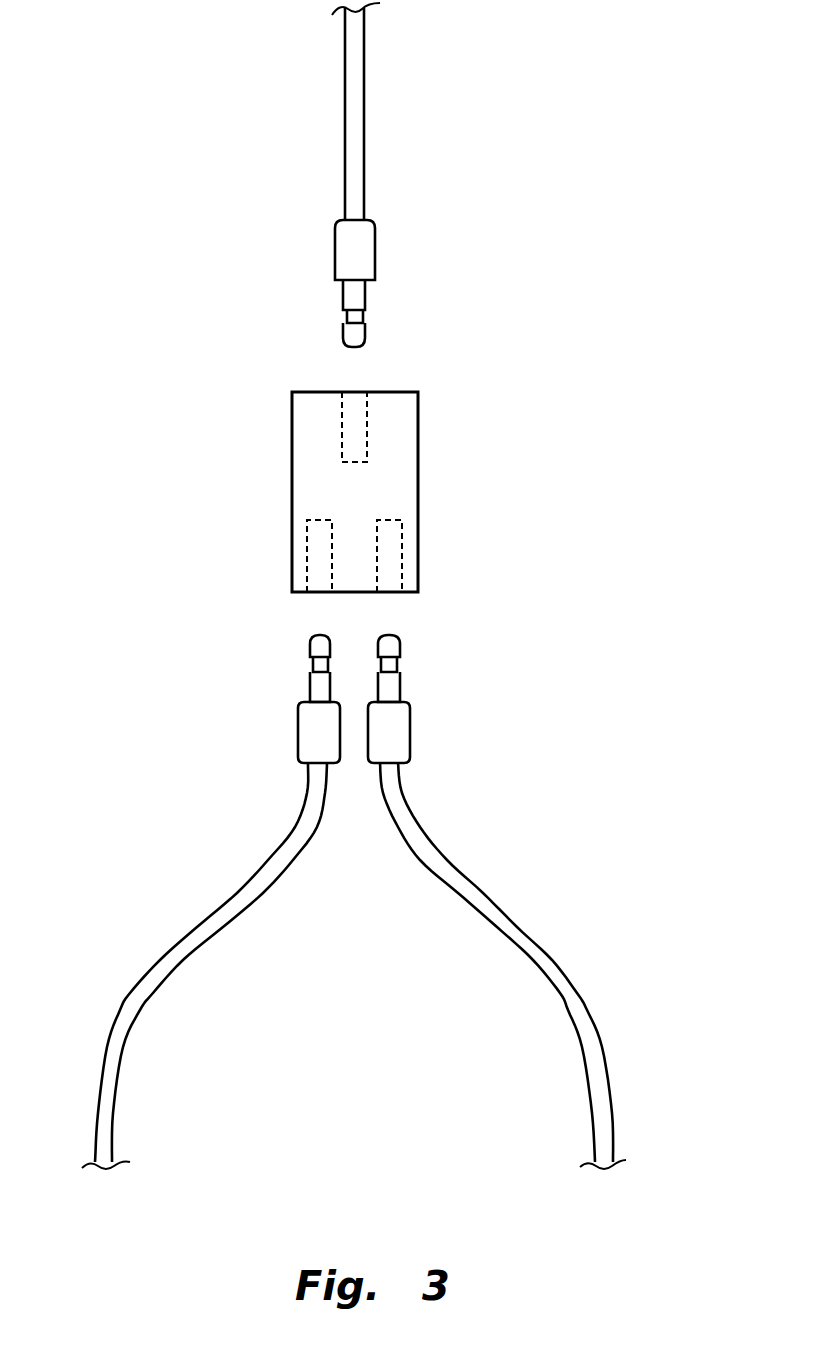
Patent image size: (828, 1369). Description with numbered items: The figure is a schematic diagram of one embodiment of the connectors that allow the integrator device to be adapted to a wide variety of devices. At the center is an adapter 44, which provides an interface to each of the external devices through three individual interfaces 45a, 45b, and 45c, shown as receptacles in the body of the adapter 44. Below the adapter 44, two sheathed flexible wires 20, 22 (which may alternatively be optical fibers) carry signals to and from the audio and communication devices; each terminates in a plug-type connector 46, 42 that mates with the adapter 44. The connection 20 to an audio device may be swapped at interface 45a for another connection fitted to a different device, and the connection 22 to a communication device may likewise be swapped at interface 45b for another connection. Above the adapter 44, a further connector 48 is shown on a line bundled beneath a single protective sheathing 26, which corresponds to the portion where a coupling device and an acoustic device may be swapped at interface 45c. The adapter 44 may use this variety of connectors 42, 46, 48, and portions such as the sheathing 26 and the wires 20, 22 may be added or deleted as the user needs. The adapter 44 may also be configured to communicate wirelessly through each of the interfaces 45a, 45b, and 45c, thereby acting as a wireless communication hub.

The sheathed flexible wire 20 is at (136, 990).
The sheathed flexible wire 22 is at (588, 1033).
The single protective sheathing 26 is at (355, 97).
The connector 42 is at (398, 730).
The adapter 44 is at (407, 483).
The interface 45a is at (320, 563).
The interface 45b is at (398, 563).
The interface 45c is at (352, 413).
The connector 46 is at (308, 735).
The connector 48 is at (358, 258).